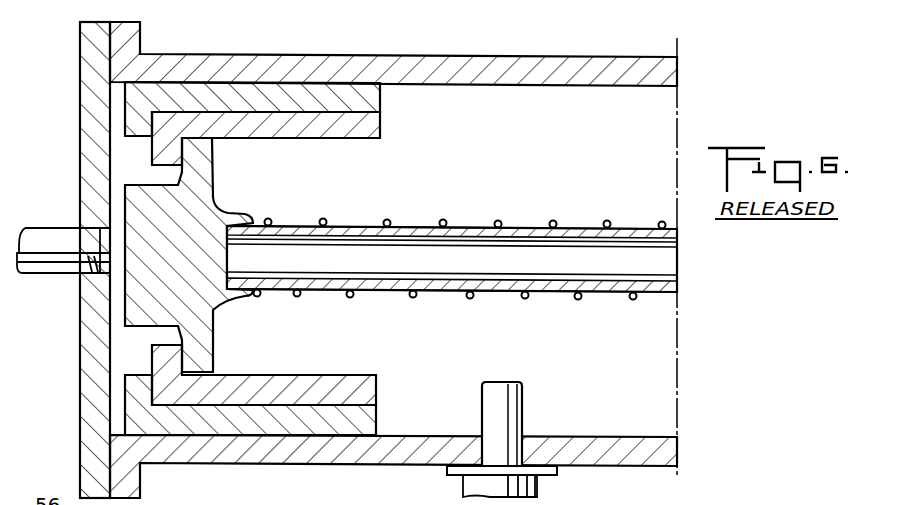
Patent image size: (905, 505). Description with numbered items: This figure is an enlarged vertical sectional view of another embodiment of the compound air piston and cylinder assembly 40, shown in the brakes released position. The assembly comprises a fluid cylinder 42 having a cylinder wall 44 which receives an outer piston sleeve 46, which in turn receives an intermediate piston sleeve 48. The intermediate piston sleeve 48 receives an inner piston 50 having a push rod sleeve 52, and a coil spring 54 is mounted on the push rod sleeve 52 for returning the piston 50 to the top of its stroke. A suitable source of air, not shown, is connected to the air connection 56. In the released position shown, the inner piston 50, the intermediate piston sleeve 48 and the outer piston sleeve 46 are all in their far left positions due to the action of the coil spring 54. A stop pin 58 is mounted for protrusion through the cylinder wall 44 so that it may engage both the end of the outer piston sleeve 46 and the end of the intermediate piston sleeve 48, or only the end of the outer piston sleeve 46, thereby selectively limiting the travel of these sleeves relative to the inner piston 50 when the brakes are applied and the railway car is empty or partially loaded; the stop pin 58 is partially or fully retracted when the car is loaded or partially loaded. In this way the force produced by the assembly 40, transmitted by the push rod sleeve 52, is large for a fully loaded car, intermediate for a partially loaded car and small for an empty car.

The compound air piston and cylinder assembly 40 is at (55, 70).
The fluid cylinder 42 is at (120, 152).
The cylinder wall 44 is at (322, 56).
The outer piston sleeve 46 is at (257, 430).
The intermediate piston sleeve 48 is at (302, 380).
The inner piston 50 is at (140, 300).
The push rod sleeve 52 is at (632, 247).
The coil spring 54 is at (510, 302).
The air connection 56 is at (38, 246).
The stop pin 58 is at (515, 423).